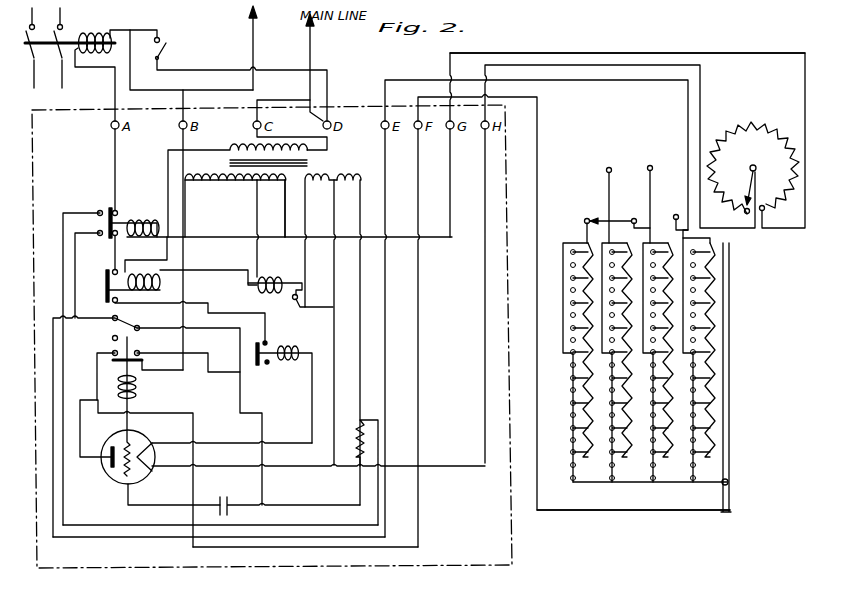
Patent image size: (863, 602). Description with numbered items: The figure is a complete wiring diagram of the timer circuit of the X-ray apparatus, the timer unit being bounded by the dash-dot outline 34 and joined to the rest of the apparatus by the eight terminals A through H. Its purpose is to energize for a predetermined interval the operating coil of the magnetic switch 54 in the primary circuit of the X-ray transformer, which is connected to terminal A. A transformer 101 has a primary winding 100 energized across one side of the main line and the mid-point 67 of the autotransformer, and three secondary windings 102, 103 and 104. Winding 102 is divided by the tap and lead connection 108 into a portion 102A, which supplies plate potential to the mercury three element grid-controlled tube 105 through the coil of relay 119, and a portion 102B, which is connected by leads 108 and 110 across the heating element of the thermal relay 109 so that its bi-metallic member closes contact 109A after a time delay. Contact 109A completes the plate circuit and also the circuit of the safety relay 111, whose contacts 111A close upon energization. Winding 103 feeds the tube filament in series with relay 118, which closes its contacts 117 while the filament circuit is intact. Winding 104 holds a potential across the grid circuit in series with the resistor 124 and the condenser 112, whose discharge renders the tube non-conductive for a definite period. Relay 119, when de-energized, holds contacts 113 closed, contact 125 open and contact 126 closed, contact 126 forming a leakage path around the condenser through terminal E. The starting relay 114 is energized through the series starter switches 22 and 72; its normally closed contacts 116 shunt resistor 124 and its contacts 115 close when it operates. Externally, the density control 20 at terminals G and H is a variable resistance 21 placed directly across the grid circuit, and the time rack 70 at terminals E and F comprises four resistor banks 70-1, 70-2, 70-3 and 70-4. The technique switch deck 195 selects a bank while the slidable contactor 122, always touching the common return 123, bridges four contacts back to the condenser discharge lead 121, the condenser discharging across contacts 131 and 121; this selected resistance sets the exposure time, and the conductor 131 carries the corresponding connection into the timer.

The magnetic switch 54 is at (98, 28).
The starter switch 22 is at (241, 78).
The Bucky starter switch 72 is at (175, 55).
The mid-point 67 is at (288, 48).
The contact 131 is at (630, 84).
The rheostat resistance 21 is at (753, 159).
The density control 20 is at (752, 176).
The control unit boundary 34 is at (510, 183).
The primary winding 100 is at (238, 145).
The transformer 101 is at (312, 160).
The secondary winding 102 is at (216, 176).
The secondary winding portion 102A is at (205, 185).
The secondary winding portion 102B is at (268, 186).
The secondary winding 104 is at (344, 180).
The tap and lead connection 108 is at (257, 212).
The lead 110 is at (287, 222).
The secondary winding 103 is at (318, 190).
The contacts 115 is at (108, 207).
The contacts 116 is at (96, 218).
The starting relay 114 is at (148, 217).
The contacts 111A is at (110, 272).
The safety relay 111 is at (150, 292).
The thermal relay 109 is at (266, 278).
The contact 109A is at (290, 313).
The relay 118 is at (296, 349).
The contacts 117 is at (267, 366).
The contact 126 is at (110, 325).
The contact 125 is at (110, 340).
The contacts 113 is at (130, 350).
The relay 119 is at (138, 394).
The grid-controlled three element tube 105 is at (108, 480).
The condenser 112 is at (240, 505).
The resistor 124 is at (356, 452).
The deck of the technique switch 195 is at (597, 216).
The time rack 70 is at (572, 362).
The resistor bank 70-1 is at (570, 367).
The resistor bank 70-2 is at (612, 362).
The resistor bank 70-3 is at (649, 362).
The resistor bank 70-4 is at (690, 360).
The common return 123 is at (730, 357).
The contactor 122 is at (597, 484).
The condenser discharge lead 121 is at (630, 511).